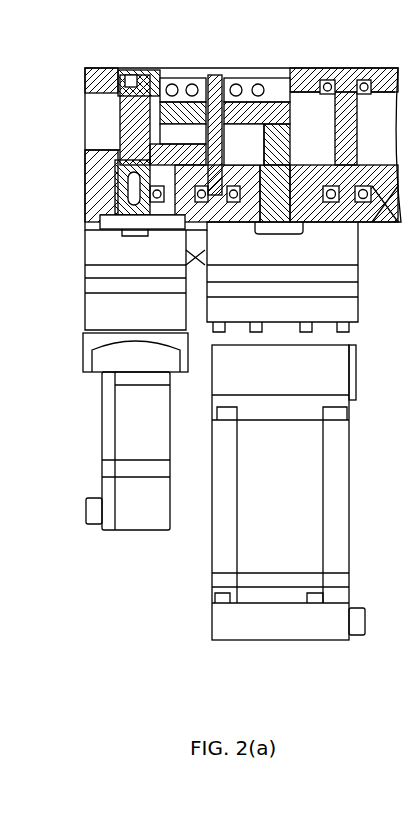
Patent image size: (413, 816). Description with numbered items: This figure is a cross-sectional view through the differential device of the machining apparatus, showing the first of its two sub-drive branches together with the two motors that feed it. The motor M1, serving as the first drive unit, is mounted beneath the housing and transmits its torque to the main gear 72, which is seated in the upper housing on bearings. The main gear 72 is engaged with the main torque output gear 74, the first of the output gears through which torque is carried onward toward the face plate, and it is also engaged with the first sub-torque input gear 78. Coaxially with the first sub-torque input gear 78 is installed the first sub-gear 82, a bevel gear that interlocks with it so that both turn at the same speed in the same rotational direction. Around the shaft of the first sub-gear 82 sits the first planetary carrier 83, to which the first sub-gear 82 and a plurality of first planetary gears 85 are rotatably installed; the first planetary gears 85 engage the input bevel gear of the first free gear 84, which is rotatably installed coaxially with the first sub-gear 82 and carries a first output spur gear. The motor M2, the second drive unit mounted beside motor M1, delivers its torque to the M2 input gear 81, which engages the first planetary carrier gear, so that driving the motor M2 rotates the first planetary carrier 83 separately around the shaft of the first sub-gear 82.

The main gear 72 is at (286, 176).
The main torque output gear 74 is at (363, 217).
The first sub-torque input gear 78 is at (128, 170).
The M2 input gear 81 is at (138, 80).
The first sub-gear 82 is at (228, 72).
The first planetary carrier 83 is at (172, 84).
The first free gear 84 is at (160, 150).
The first planetary gears 85 is at (257, 86).
The motor M1 is at (216, 557).
The motor M2 is at (100, 437).